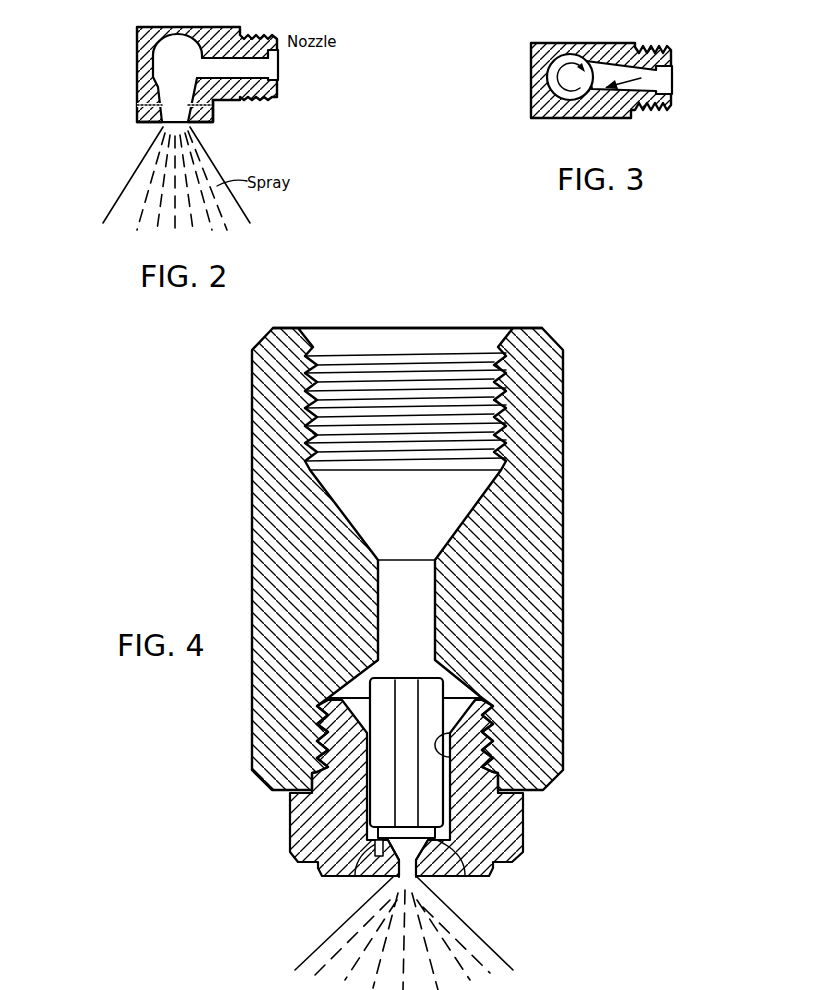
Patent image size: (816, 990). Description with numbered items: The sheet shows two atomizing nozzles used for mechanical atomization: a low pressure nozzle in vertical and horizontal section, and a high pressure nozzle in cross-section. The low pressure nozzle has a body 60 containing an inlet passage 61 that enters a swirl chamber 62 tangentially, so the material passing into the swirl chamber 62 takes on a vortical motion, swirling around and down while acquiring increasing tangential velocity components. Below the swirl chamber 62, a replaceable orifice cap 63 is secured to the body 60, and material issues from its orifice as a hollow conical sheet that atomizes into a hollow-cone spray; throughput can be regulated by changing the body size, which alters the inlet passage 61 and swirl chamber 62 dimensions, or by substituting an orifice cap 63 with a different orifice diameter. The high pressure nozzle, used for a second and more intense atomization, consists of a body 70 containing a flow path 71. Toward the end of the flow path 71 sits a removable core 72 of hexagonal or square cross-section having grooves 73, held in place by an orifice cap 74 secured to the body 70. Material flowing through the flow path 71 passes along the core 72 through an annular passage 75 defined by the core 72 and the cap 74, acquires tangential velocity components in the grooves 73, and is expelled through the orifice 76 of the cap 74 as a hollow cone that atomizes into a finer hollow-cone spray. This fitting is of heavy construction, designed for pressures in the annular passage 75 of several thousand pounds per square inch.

In FIG. 2, the body 60 is at (135, 40).
In FIG. 3, the body 60 is at (571, 21).
In FIG. 2, the inlet passage 61 is at (207, 66).
In FIG. 3, the inlet passage 61 is at (645, 95).
In FIG. 2, the swirl chamber 62 is at (173, 60).
In FIG. 3, the swirl chamber 62 is at (547, 84).
In FIG. 2, the replaceable orifice cap 63 is at (217, 113).
In FIG. 4, the body 70 is at (563, 435).
In FIG. 4, the flow path 71 is at (478, 268).
In FIG. 4, the removable core 72 is at (408, 678).
In FIG. 4, the grooves 73 is at (442, 872).
In FIG. 4, the orifice cap 74 is at (523, 825).
In FIG. 4, the annular passage 75 is at (452, 736).
In FIG. 4, the orifice 76 is at (412, 888).